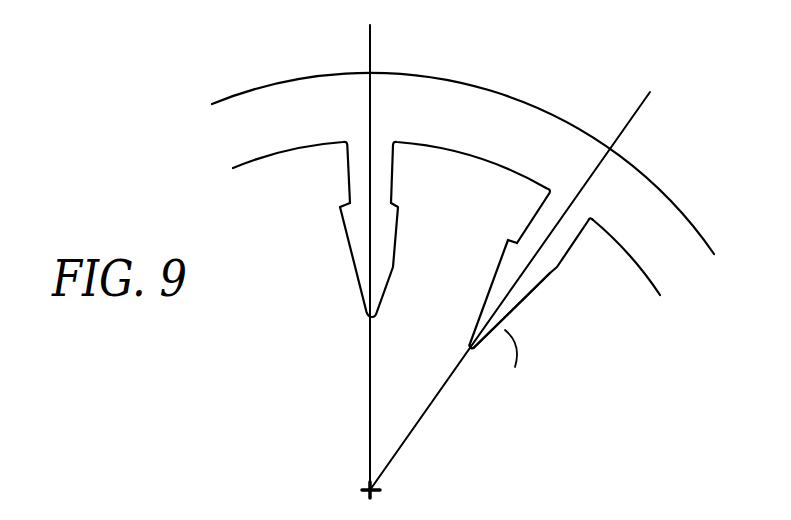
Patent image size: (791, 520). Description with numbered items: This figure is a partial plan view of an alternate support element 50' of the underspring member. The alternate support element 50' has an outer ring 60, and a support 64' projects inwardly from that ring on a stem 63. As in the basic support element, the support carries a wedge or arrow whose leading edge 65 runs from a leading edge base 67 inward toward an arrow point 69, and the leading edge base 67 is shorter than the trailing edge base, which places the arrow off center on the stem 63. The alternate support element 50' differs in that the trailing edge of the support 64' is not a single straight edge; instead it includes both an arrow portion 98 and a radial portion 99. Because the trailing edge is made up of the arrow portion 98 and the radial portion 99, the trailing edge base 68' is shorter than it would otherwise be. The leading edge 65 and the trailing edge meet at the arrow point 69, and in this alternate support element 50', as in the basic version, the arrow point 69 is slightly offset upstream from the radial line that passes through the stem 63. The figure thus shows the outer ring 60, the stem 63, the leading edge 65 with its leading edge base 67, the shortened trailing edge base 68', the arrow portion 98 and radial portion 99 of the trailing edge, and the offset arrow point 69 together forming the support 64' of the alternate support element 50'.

The alternate support element 50' is at (463, 226).
The outer ring 60 is at (502, 92).
The stem 63 is at (578, 236).
The support 64' is at (404, 289).
The leading edge 65 is at (498, 263).
The leading edge base 67 is at (348, 200).
The trailing edge base 68' is at (470, 192).
The arrow point 69 is at (470, 350).
The arrow portion 98 is at (514, 361).
The radial portion 99 is at (536, 287).